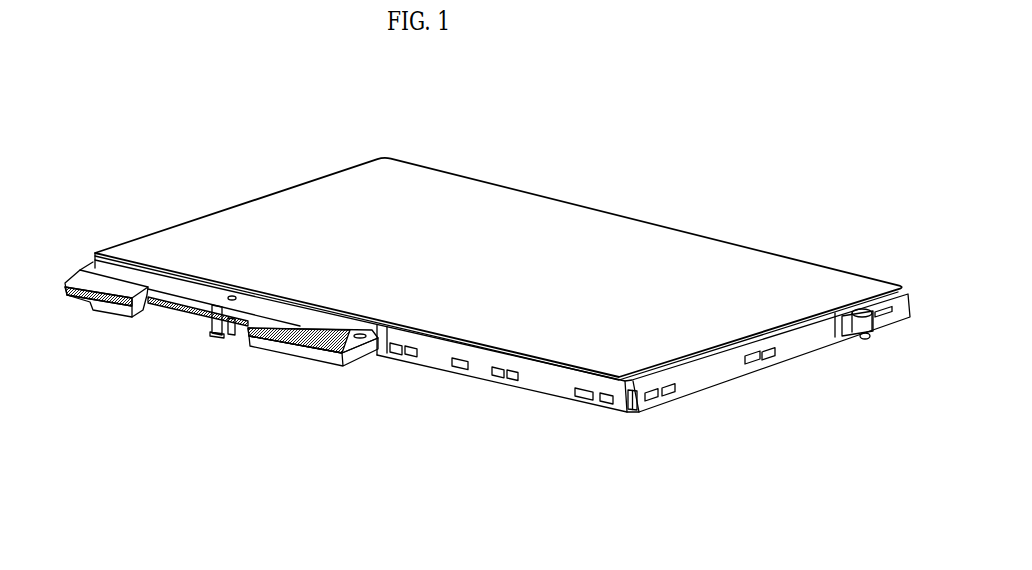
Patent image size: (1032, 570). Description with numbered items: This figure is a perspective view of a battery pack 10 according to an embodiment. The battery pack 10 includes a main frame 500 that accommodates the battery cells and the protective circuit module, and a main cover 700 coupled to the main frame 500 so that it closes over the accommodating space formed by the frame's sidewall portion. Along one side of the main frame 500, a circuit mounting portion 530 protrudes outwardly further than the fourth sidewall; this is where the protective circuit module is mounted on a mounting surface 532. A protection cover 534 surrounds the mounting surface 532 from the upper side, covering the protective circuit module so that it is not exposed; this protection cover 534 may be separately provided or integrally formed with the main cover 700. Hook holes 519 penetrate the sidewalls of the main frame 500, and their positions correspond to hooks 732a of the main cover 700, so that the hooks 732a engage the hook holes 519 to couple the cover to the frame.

The battery pack 10 is at (62, 105).
The main cover 700 is at (626, 238).
The main frame 500 is at (716, 376).
The circuit mounting portion 530 is at (291, 404).
The mounting surface 532 is at (313, 351).
The protection cover 534 is at (281, 328).
The hooks 732a is at (488, 373).
The hook holes 519 is at (512, 380).